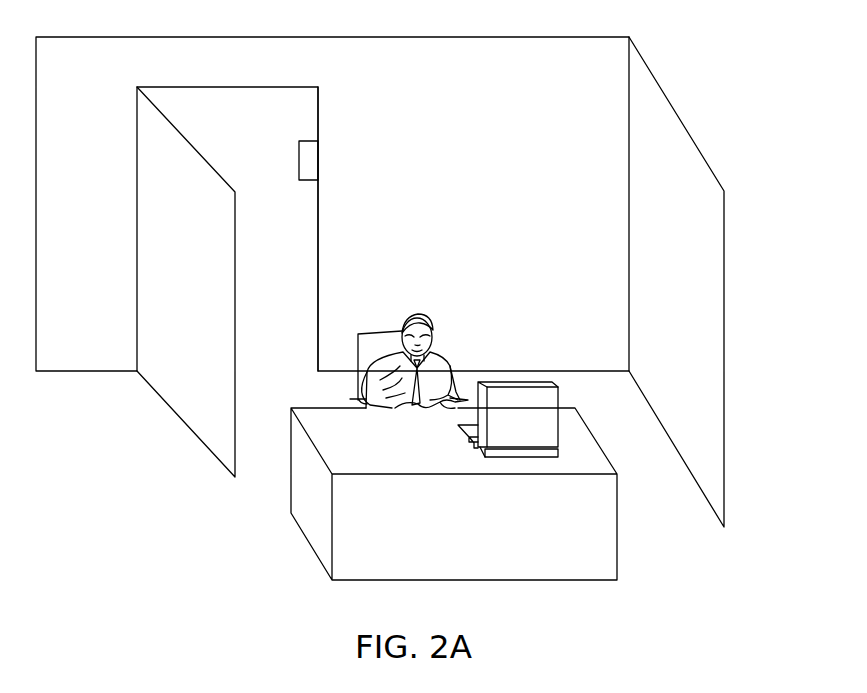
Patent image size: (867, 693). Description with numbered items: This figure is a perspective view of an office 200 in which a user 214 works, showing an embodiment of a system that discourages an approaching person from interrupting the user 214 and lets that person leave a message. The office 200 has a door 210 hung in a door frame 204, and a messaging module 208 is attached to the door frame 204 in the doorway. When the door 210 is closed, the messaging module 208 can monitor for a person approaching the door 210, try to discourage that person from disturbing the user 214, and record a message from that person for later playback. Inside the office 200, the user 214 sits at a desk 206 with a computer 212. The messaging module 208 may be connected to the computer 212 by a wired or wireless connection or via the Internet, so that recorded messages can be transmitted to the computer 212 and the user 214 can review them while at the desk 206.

The office 200 is at (677, 81).
The door frame 204 is at (322, 286).
The desk 206 is at (572, 402).
The messaging module 208 is at (311, 158).
The door 210 is at (208, 290).
The computer 212 is at (466, 391).
The user 214 is at (417, 308).